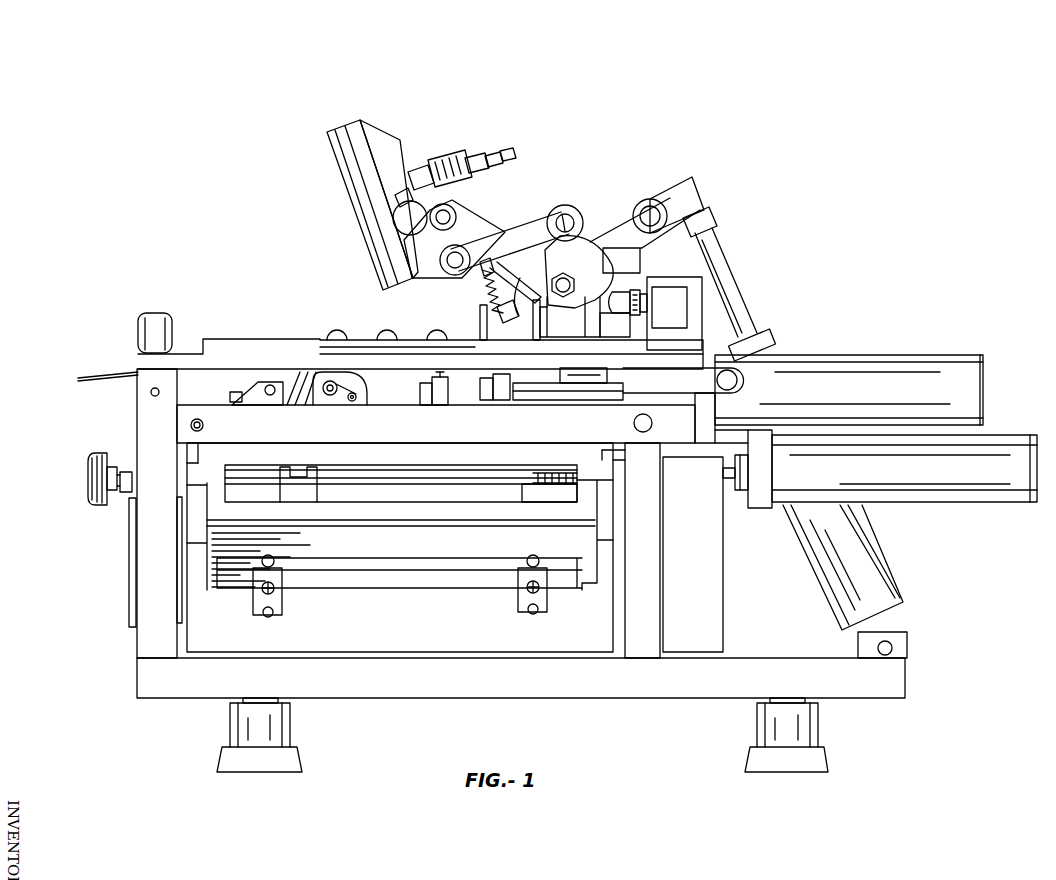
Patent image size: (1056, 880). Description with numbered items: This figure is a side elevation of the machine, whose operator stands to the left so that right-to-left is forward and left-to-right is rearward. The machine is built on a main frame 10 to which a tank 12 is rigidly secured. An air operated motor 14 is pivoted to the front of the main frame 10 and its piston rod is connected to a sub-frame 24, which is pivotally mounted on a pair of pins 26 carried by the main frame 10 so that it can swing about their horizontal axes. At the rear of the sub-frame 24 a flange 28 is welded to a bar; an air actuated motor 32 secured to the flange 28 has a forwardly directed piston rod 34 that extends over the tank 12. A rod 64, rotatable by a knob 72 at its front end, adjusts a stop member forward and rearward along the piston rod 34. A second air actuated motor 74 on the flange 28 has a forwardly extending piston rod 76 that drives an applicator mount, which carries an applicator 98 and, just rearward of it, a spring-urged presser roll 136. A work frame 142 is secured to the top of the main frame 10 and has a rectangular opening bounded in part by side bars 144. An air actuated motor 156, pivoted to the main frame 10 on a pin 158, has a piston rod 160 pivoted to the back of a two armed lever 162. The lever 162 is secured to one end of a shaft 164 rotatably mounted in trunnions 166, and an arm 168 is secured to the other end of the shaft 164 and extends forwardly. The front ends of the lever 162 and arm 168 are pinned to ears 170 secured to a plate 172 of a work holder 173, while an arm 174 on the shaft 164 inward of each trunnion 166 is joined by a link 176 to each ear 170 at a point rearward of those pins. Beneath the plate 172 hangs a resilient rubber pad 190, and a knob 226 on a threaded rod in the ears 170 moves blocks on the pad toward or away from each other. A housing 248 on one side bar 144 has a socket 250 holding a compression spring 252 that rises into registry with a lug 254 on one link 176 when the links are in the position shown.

The main frame 10 is at (118, 665).
The tank 12 is at (403, 633).
The air operated motor 14 is at (137, 565).
The sub-frame 24 is at (408, 416).
The pins 26 is at (634, 425).
The flange 28 is at (757, 497).
The air actuated motor 32 is at (948, 487).
The piston rod 34 is at (728, 472).
The rod 64 is at (414, 470).
The knob 72 is at (90, 480).
The air actuated motor 74 is at (873, 368).
The piston rod 76 is at (532, 396).
The applicator 98 is at (300, 372).
The roll 136 is at (305, 388).
The work frame 142 is at (245, 315).
The side bars 144 is at (455, 330).
The air actuated motor 156 is at (855, 543).
The pin 158 is at (892, 648).
The piston rod 160 is at (722, 276).
The two armed lever 162 is at (620, 222).
The shaft 164 is at (567, 278).
The trunnions 166 is at (582, 328).
The arm 168 is at (475, 222).
The ears 170 is at (392, 152).
The plate 172 is at (362, 121).
The work holder 173 is at (310, 110).
The arm 174 is at (590, 238).
The link 176 is at (527, 222).
The pad 190 is at (355, 233).
The knob 226 is at (412, 226).
The housing 248 is at (515, 286).
The socket 250 is at (490, 316).
The compression spring 252 is at (482, 297).
The lug 254 is at (487, 262).